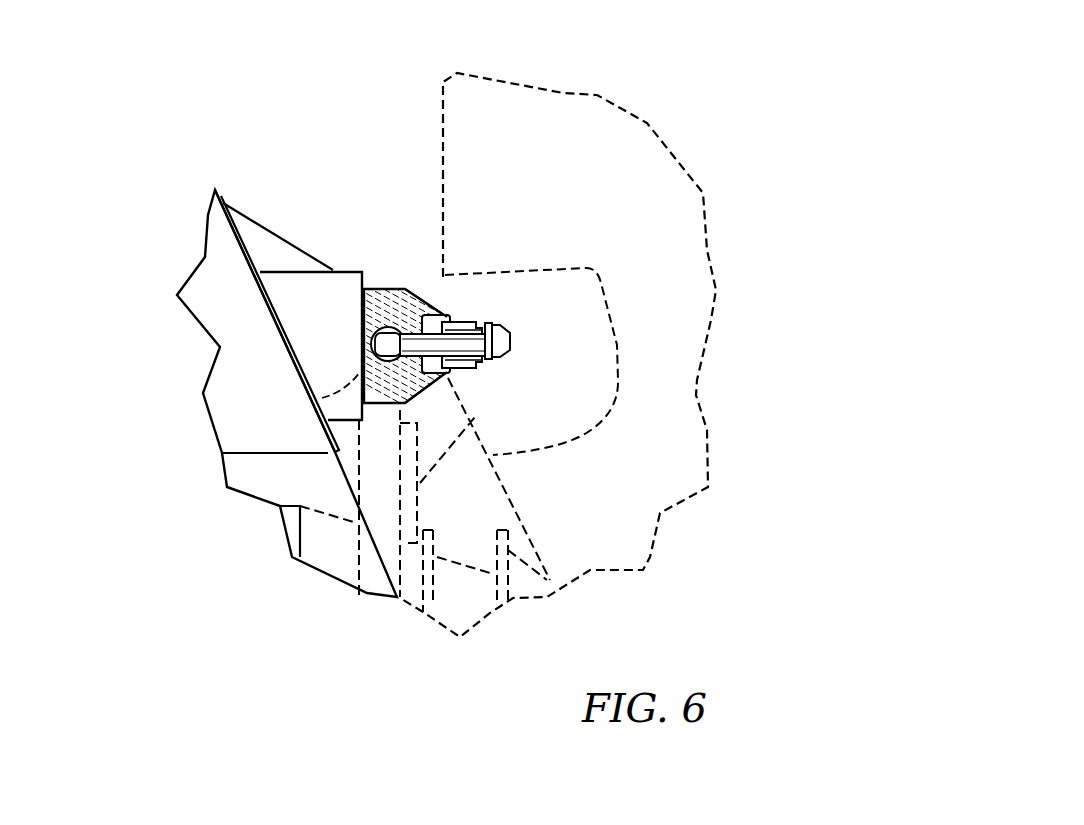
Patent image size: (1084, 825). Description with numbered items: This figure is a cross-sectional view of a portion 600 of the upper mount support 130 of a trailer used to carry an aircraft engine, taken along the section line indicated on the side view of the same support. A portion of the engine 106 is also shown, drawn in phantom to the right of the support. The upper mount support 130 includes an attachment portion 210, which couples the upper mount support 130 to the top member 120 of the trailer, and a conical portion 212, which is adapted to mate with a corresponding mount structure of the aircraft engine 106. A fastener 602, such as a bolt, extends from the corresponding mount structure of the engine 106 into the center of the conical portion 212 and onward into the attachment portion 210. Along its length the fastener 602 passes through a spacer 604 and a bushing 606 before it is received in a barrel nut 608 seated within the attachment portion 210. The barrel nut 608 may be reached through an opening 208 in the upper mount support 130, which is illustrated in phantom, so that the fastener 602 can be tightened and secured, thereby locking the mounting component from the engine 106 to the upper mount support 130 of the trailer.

The engine 106 is at (565, 93).
The top member 120 is at (215, 270).
The upper mount support 130 is at (224, 131).
The opening 208 is at (298, 400).
The attachment portion 210 is at (383, 287).
The conical portion 212 is at (440, 311).
The portion 600 is at (804, 90).
The fastener 602 is at (505, 342).
The spacer 604 is at (470, 318).
The bushing 606 is at (440, 313).
The barrel nut 608 is at (363, 304).